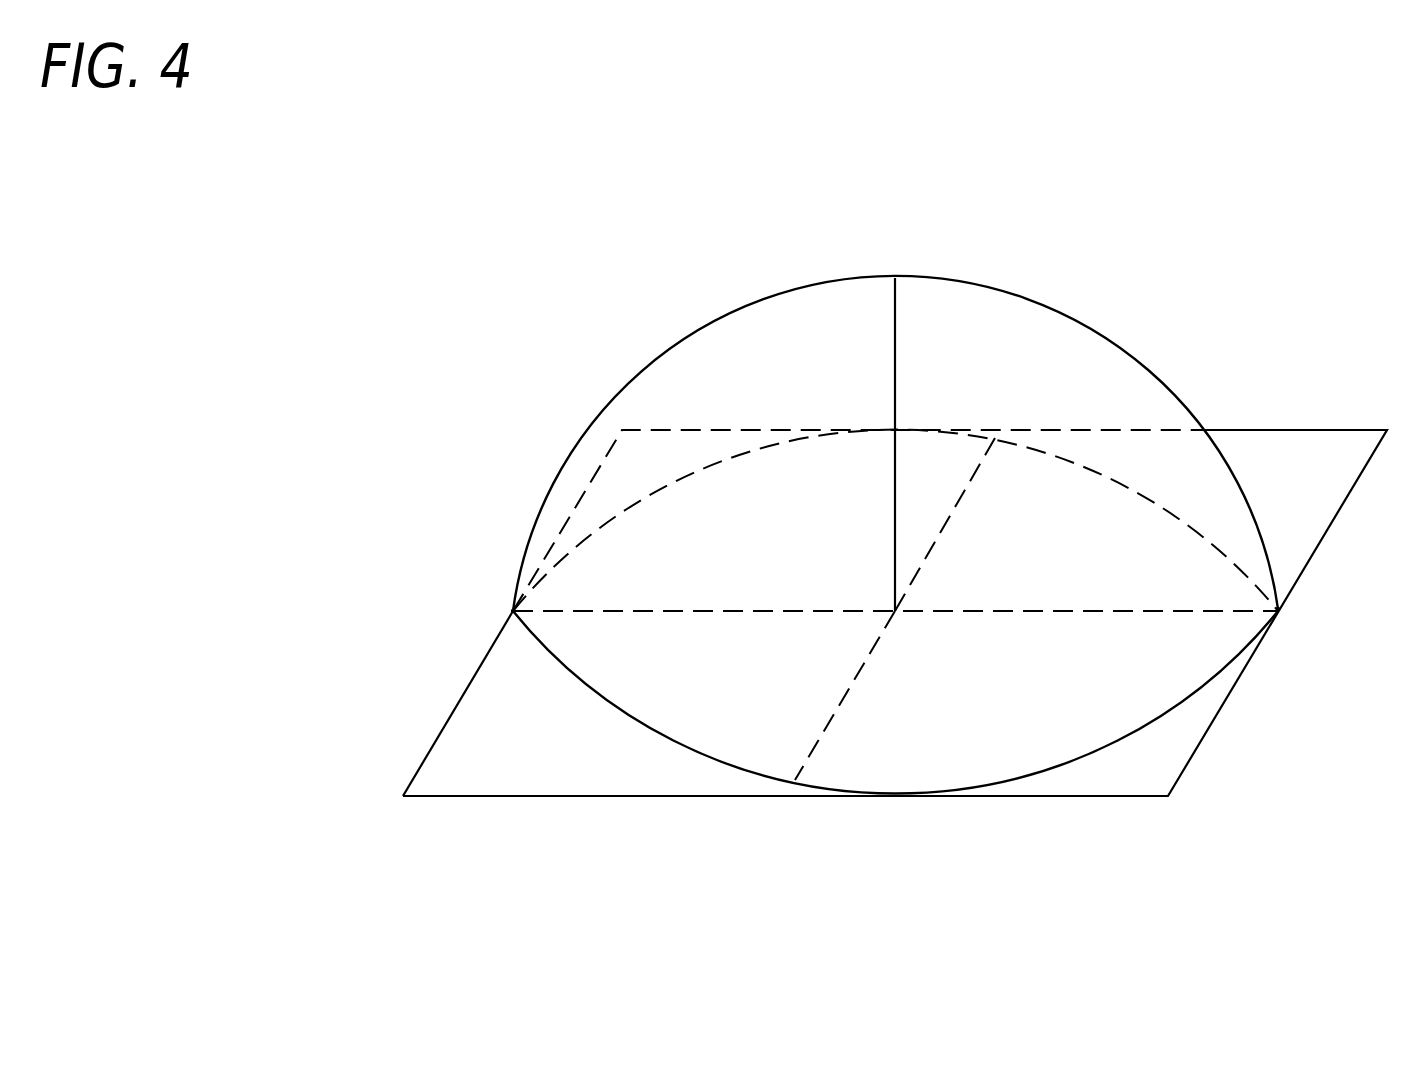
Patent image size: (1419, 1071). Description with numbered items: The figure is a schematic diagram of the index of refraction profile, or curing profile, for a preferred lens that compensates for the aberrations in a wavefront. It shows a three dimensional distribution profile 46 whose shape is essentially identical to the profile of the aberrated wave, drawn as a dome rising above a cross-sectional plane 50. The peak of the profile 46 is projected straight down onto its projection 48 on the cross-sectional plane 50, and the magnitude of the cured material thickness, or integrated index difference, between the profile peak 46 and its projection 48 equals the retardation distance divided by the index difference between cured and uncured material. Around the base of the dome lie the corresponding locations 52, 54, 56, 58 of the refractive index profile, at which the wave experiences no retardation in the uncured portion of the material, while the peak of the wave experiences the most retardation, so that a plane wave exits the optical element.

The three dimensional distribution profile 46 is at (898, 276).
The projection 48 is at (895, 611).
The cross-sectional plane 50 is at (498, 765).
The location of the refractive index profile 52 is at (927, 430).
The location of the refractive index profile 54 is at (1278, 609).
The location of the refractive index profile 56 is at (898, 795).
The location of the refractive index profile 58 is at (513, 611).